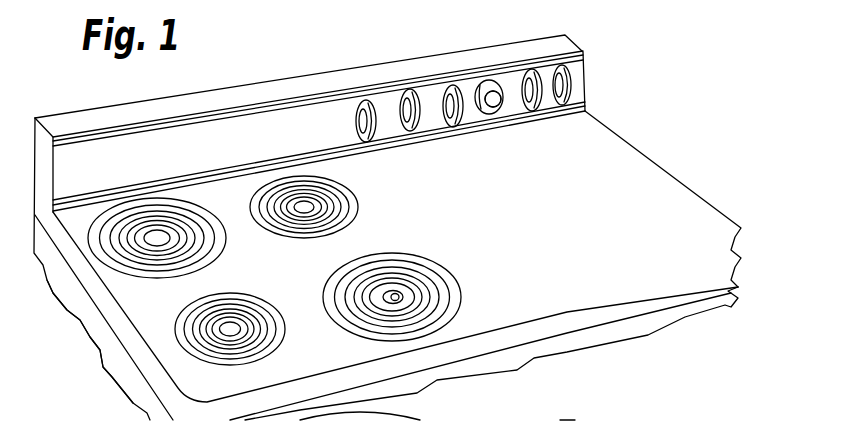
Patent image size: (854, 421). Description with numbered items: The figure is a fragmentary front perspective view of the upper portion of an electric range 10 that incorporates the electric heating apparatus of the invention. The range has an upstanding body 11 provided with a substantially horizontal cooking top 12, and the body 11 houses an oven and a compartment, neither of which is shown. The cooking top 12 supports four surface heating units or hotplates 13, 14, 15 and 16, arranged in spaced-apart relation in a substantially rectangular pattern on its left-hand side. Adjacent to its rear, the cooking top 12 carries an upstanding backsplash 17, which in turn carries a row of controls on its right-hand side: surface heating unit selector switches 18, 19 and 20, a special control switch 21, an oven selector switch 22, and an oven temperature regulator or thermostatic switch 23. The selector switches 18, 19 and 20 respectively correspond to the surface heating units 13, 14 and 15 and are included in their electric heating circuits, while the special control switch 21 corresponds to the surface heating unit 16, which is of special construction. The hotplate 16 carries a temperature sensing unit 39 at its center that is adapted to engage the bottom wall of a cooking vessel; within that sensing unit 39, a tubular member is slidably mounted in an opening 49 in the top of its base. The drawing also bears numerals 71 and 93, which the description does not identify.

The electric range 10 is at (47, 330).
The upstanding body 11 is at (109, 374).
The cooking top 12 is at (582, 223).
The surface heating unit 13 is at (262, 339).
The surface heating unit 14 is at (194, 247).
The surface heating unit 15 is at (298, 237).
The surface heating unit 16 is at (439, 278).
The backsplash 17 is at (262, 96).
The surface heating unit selector switch 18 is at (371, 102).
The surface heating unit selector switch 19 is at (416, 90).
The surface heating unit selector switch 20 is at (458, 86).
The special control switch 21 is at (497, 80).
The oven selector switch 22 is at (537, 78).
The oven temperature regulator or thermostatic switch 23 is at (571, 73).
The temperature sensing unit 39 is at (397, 296).
The control dial 71 is at (492, 110).
The heating element 93 is at (403, 416).
The opening 49 is at (570, 417).